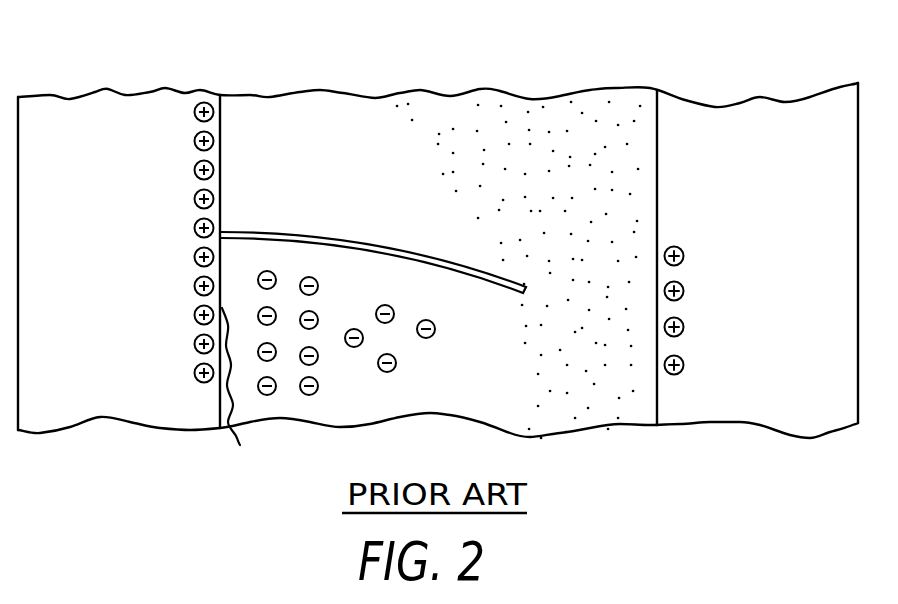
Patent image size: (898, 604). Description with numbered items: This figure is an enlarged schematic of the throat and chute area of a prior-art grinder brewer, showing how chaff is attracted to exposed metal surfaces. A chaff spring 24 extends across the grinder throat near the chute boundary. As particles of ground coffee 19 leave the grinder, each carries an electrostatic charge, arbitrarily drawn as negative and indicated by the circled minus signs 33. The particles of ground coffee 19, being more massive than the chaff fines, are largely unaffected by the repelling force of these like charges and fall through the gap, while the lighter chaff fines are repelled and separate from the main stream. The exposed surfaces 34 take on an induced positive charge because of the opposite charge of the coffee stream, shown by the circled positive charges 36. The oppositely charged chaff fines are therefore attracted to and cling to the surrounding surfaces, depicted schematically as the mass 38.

The ground coffee 19 is at (580, 337).
The chaff spring 24 is at (372, 243).
The circled minus signs 33 is at (305, 278).
The exposed surfaces 34 is at (222, 113).
The circled positive charges 36 is at (196, 349).
The mass 38 is at (248, 394).